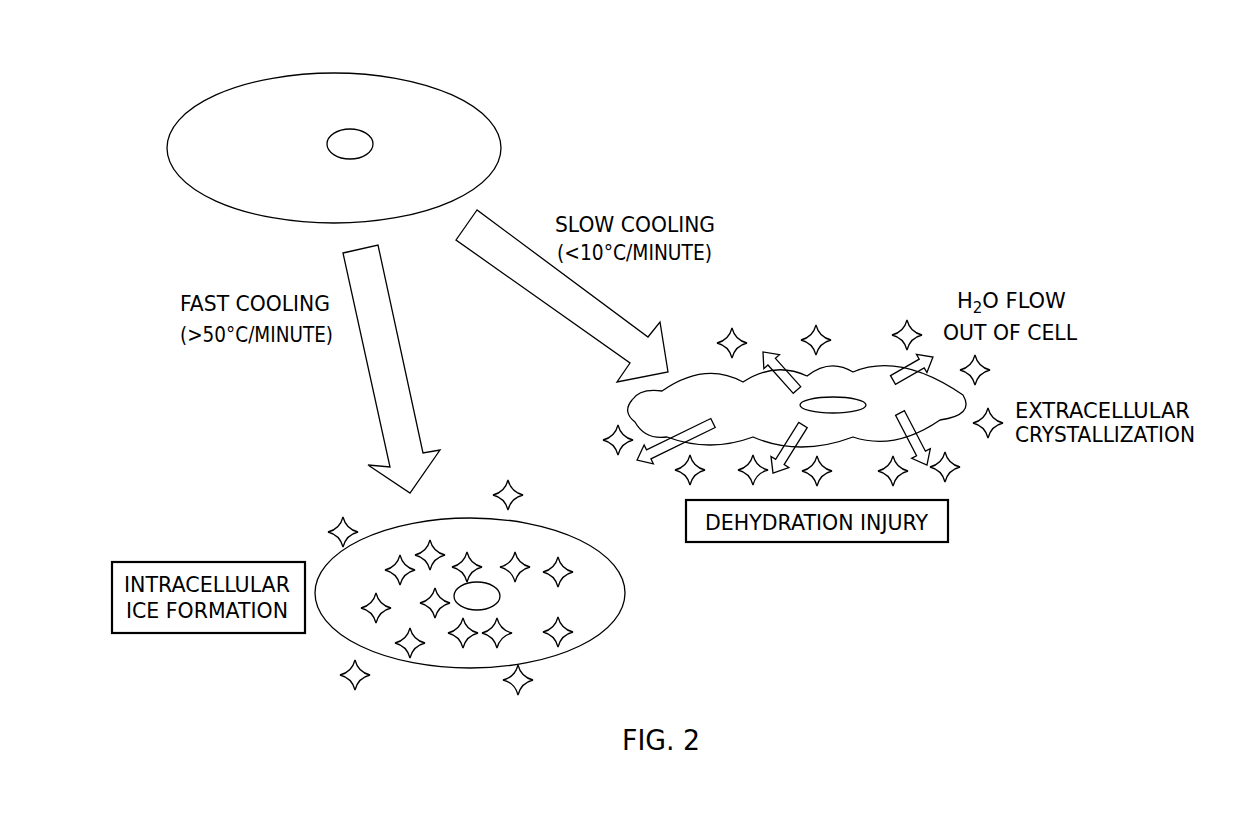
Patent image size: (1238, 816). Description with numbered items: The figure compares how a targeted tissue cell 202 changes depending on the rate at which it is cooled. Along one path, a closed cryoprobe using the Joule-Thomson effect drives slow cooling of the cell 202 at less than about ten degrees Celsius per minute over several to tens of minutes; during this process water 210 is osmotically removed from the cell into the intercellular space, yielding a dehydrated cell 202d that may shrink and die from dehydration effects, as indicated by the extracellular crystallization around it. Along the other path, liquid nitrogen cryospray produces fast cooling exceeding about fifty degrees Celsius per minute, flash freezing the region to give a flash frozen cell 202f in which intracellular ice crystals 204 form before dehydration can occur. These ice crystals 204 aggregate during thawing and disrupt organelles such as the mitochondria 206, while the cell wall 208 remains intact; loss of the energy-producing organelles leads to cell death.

The targeted tissue cell 202 is at (597, 371).
The dehydrated cell 202d is at (852, 366).
The flash frozen cell 202f is at (661, 512).
The intracellular ice crystals 204 is at (567, 583).
The mitochondria 206 is at (455, 603).
The cell wall 208 is at (625, 595).
The water 210 is at (812, 330).